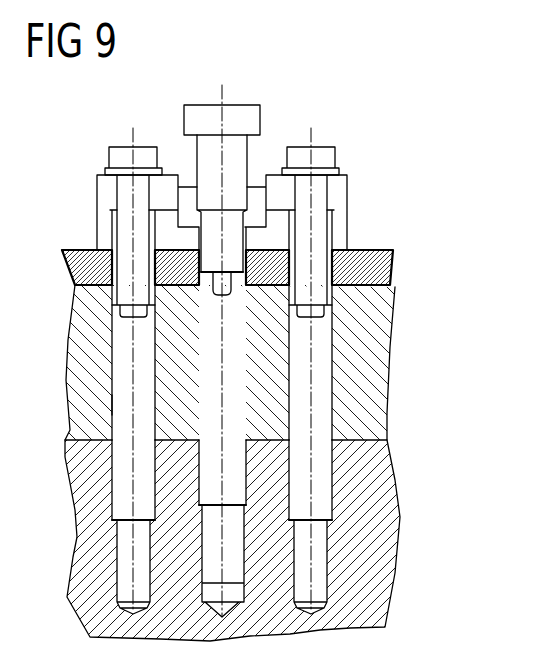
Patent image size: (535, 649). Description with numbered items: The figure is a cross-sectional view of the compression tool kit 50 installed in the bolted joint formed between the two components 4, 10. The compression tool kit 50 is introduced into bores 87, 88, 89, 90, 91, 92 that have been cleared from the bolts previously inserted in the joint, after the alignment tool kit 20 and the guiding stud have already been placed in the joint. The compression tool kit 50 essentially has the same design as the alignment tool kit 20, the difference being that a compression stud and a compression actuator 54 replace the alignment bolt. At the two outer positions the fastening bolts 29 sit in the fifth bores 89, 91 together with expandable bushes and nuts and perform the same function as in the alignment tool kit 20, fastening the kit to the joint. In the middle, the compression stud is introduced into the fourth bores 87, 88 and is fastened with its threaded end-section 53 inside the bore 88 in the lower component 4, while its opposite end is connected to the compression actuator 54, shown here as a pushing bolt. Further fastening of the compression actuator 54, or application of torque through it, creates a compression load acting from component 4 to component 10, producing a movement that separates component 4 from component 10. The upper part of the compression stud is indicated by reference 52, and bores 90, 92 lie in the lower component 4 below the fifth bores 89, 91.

The component 4 is at (72, 540).
The component 10 is at (385, 323).
The alignment tool kit 20 is at (107, 195).
The fastening bolts 29 is at (143, 157).
The compression tool kit 50 is at (414, 98).
The upper portion of centering pin 52 is at (232, 360).
The threaded end-section 53 is at (230, 553).
The compression actuator 54 is at (235, 140).
The fourth bore 87 is at (200, 372).
The fourth bore 88 is at (190, 480).
The fifth bore 89 is at (112, 405).
The bore 90 is at (110, 452).
The fifth bore 91 is at (333, 413).
The bore 92 is at (335, 490).